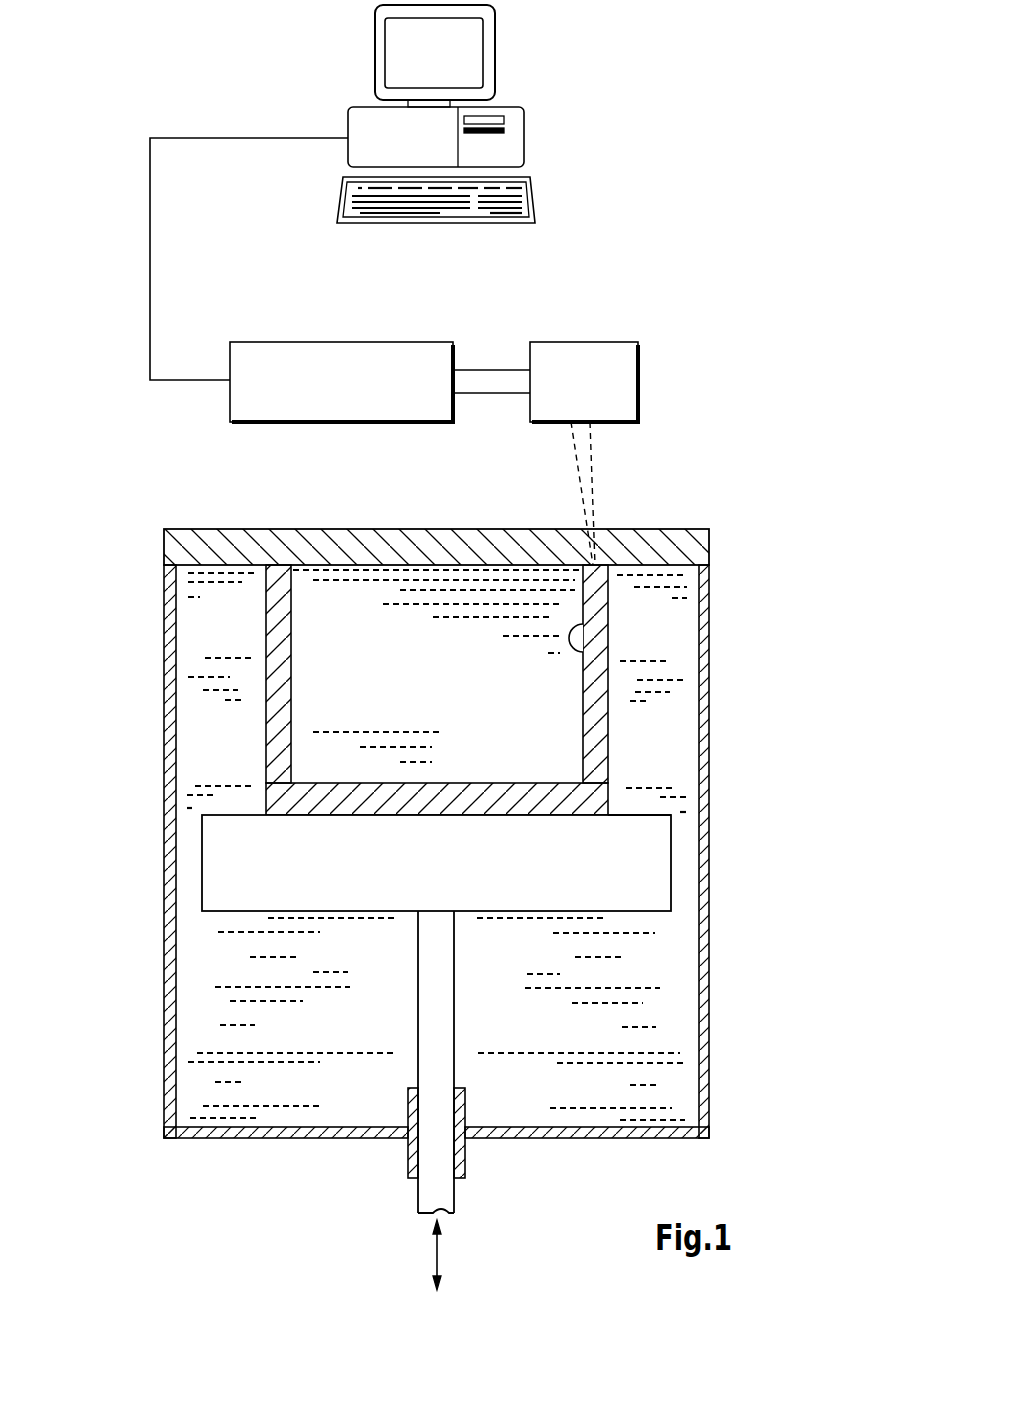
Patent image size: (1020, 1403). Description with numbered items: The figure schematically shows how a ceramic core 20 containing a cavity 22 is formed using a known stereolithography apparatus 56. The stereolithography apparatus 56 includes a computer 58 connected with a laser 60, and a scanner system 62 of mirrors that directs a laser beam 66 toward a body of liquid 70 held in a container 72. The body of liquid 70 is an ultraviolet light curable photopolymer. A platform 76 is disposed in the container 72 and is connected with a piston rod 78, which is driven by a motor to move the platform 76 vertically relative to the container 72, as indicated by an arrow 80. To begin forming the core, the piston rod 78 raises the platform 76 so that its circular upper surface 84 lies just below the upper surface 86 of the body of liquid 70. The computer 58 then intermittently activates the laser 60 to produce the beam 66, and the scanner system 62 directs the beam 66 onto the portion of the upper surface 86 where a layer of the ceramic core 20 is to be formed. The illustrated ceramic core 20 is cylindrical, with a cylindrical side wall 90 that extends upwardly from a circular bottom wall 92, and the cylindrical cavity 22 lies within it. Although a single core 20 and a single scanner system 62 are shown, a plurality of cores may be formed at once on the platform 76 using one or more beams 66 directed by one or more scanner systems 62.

The ceramic core 20 is at (612, 684).
The cavity 22 is at (582, 650).
The stereolithography apparatus 56 is at (650, 212).
The computer 58 is at (548, 124).
The laser 60 is at (368, 352).
The scanner system 62 is at (591, 357).
The laser beam 66 is at (593, 480).
The body of liquid 70 is at (210, 667).
The container 72 is at (168, 983).
The platform 76 is at (628, 864).
The piston rod 78 is at (437, 1185).
The arrow 80 is at (440, 1257).
The upper surface of the platform 84 is at (650, 815).
The upper surface of the body of liquid 86 is at (222, 562).
The cylindrical side wall 90 is at (282, 718).
The circular bottom wall 92 is at (377, 798).